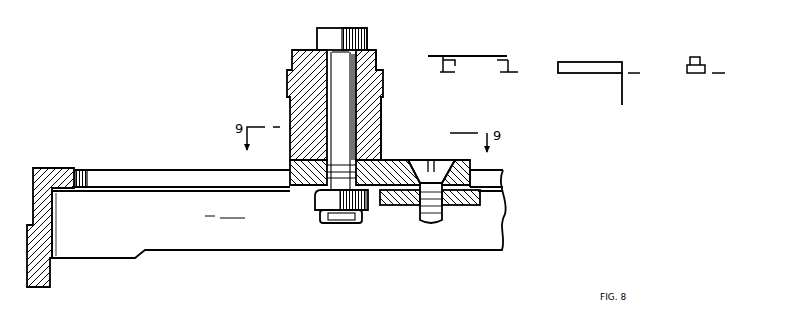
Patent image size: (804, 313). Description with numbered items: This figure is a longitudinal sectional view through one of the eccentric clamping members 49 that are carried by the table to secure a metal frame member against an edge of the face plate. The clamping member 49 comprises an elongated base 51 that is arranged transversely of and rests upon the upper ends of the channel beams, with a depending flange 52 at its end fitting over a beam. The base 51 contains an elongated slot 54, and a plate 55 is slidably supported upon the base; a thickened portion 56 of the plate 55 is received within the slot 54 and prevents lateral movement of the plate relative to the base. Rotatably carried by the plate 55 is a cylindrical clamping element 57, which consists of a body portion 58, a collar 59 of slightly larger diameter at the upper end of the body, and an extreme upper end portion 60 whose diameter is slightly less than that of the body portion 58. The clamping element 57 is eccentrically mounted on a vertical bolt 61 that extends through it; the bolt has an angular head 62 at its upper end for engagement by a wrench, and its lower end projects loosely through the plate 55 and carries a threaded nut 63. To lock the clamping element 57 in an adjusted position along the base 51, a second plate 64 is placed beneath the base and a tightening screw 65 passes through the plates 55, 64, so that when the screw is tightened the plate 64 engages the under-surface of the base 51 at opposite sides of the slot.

The eccentric clamping member 49 is at (174, 260).
The elongated base 51 is at (61, 168).
The depending flange 52 is at (46, 274).
The elongated slot 54 is at (160, 170).
The plate 55 is at (389, 160).
The thickened portion 56 is at (297, 188).
The cylindrical clamping element 57 is at (390, 108).
The body portion 58 is at (291, 106).
The collar 59 is at (286, 81).
The extreme upper end portion 60 is at (373, 61).
The vertical bolt 61 is at (336, 64).
The angular head 62 is at (319, 34).
The nut 63 is at (366, 208).
The second plate 64 is at (490, 228).
The tightening screw 65 is at (421, 216).